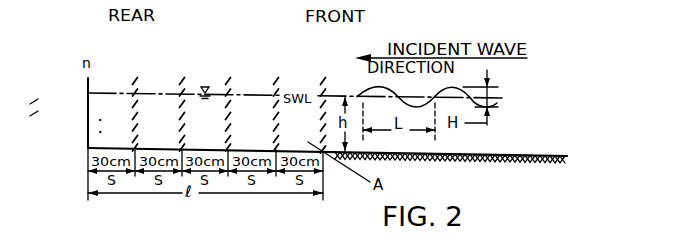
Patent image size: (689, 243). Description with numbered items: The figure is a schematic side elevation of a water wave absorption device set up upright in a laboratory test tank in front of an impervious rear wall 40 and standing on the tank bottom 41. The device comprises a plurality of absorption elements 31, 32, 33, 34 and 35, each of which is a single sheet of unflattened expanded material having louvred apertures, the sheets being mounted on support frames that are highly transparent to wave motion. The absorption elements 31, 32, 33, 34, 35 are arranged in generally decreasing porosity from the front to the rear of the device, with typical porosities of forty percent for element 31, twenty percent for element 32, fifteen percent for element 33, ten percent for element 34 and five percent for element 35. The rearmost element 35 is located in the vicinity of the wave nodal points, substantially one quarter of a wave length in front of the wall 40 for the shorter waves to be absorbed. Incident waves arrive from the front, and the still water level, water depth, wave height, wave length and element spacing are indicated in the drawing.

The absorption element 31 is at (328, 93).
The absorption element 32 is at (277, 92).
The absorption element 33 is at (231, 92).
The absorption element 34 is at (185, 92).
The absorption element 35 is at (130, 92).
The impervious rear wall 40 is at (88, 131).
The tank bottom 41 is at (483, 155).